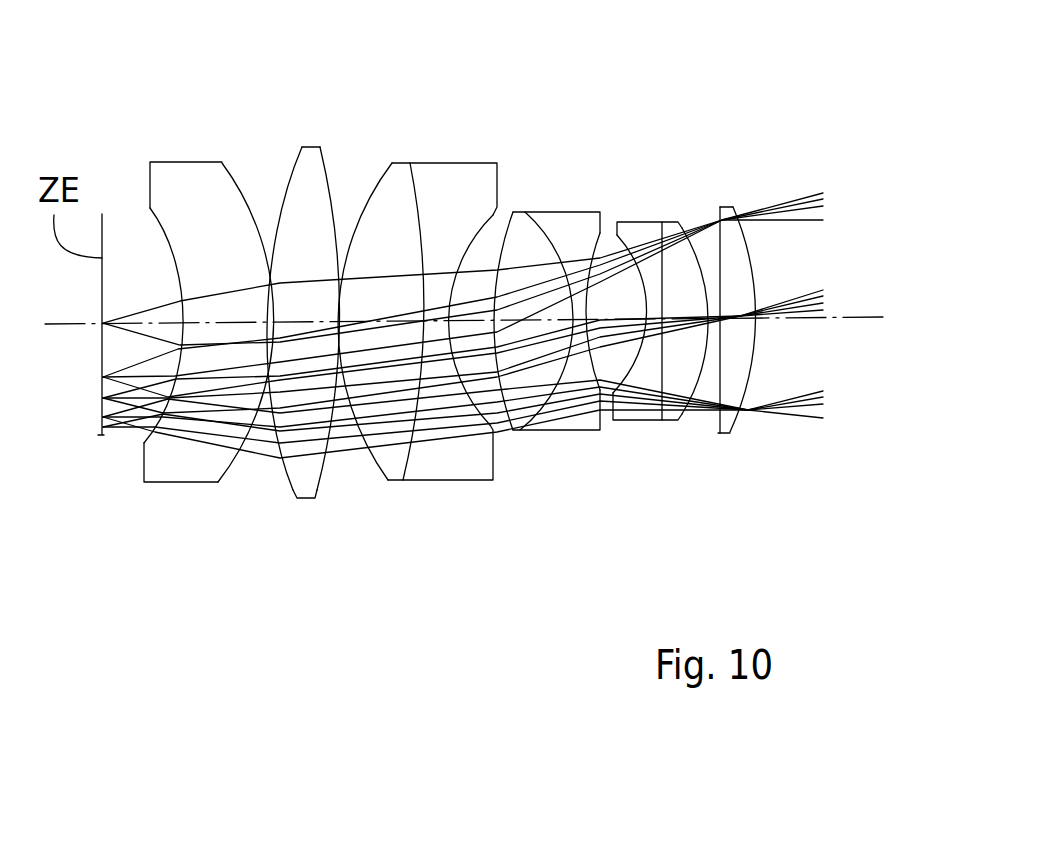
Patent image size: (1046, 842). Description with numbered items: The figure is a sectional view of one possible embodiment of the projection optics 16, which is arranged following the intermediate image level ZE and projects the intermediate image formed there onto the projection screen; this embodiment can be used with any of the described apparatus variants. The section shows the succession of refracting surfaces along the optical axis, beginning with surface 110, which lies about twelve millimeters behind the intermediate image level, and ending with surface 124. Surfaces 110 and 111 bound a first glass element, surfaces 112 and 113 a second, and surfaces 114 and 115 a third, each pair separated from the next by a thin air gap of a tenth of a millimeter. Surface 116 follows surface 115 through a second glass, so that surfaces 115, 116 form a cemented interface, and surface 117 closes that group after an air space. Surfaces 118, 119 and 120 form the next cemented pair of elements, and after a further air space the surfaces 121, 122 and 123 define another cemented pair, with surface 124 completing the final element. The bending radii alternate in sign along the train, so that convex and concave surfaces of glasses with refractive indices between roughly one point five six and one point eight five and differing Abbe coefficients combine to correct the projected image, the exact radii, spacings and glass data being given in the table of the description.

The projection optics 16 is at (327, 603).
The refracting surface 110 is at (158, 222).
The refracting surface 111 is at (240, 188).
The refracting surface 112 is at (288, 192).
The refracting surface 113 is at (333, 173).
The refracting surface 114 is at (372, 197).
The refracting surface 115 is at (417, 200).
The refracting surface 116 is at (462, 225).
The refracting surface 117 is at (497, 247).
The refracting surface 118 is at (560, 245).
The refracting surface 119 is at (590, 243).
The refracting surface 120 is at (608, 250).
The refracting surface 121 is at (652, 367).
The refracting surface 122 is at (700, 387).
The refracting surface 123 is at (717, 242).
The refracting surface 124 is at (748, 390).